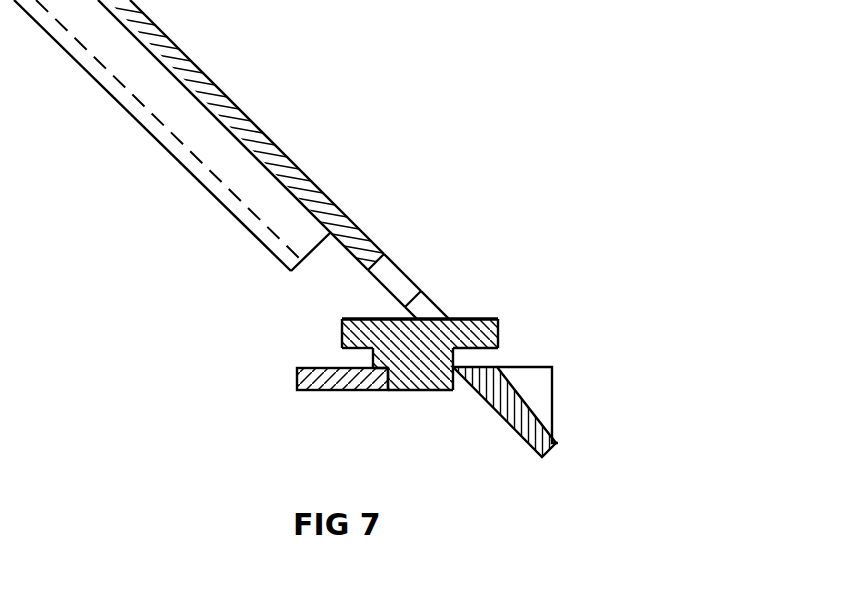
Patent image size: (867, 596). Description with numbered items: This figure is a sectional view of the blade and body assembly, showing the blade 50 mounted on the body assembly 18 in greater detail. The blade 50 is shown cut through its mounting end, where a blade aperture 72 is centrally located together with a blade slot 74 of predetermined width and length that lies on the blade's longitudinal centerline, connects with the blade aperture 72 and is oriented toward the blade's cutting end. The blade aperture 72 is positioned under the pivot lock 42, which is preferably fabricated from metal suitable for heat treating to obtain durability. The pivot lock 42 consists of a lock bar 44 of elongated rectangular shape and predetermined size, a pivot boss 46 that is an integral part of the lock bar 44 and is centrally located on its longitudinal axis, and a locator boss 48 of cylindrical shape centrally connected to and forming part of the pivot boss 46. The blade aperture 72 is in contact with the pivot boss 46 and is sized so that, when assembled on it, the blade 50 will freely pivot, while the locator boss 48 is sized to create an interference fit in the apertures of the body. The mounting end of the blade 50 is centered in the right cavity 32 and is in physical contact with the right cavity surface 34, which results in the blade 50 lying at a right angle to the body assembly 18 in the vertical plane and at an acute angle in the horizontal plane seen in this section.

The body assembly 18 is at (272, 377).
The right cavity 32 is at (557, 443).
The right cavity surface 34 is at (522, 413).
The pivot lock 42 is at (342, 335).
The lock bar 44 is at (500, 333).
The pivot boss 46 is at (373, 358).
The locator boss 48 is at (418, 392).
The blade 50 is at (230, 100).
The blade aperture 72 is at (432, 311).
The blade slot 74 is at (390, 274).